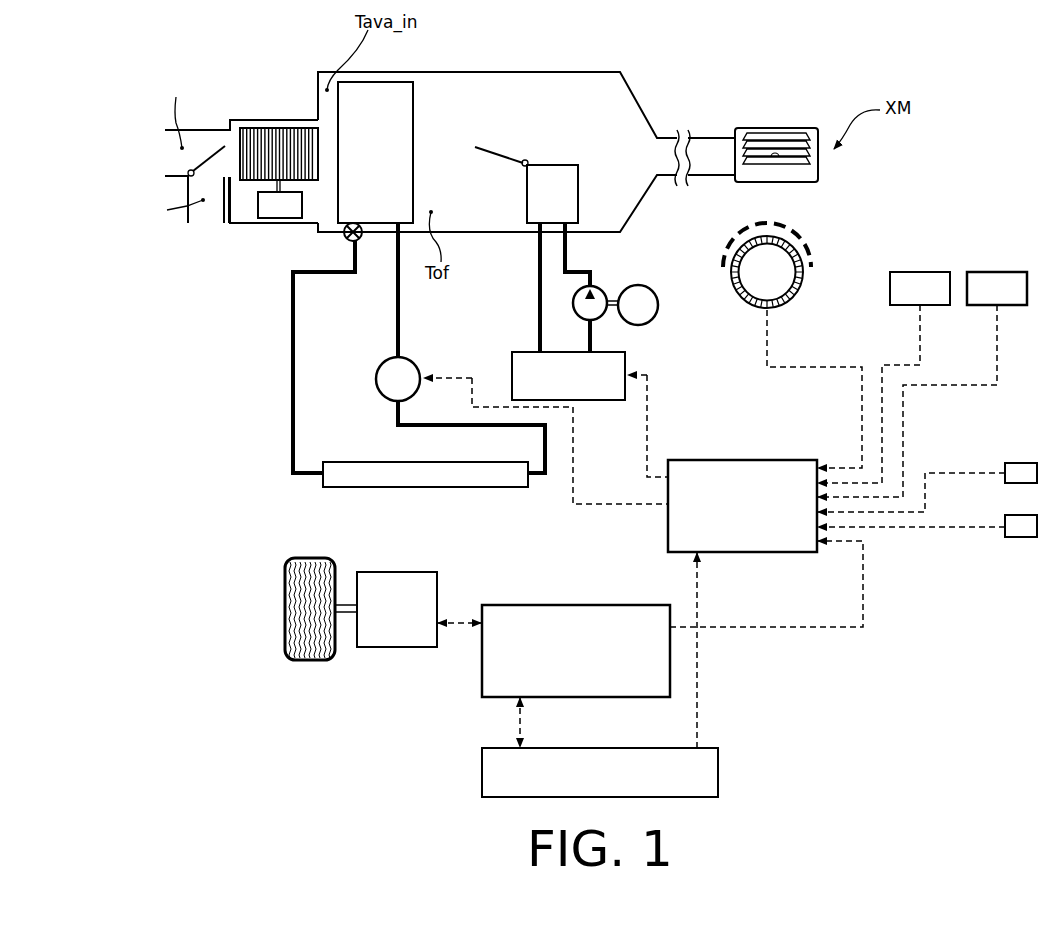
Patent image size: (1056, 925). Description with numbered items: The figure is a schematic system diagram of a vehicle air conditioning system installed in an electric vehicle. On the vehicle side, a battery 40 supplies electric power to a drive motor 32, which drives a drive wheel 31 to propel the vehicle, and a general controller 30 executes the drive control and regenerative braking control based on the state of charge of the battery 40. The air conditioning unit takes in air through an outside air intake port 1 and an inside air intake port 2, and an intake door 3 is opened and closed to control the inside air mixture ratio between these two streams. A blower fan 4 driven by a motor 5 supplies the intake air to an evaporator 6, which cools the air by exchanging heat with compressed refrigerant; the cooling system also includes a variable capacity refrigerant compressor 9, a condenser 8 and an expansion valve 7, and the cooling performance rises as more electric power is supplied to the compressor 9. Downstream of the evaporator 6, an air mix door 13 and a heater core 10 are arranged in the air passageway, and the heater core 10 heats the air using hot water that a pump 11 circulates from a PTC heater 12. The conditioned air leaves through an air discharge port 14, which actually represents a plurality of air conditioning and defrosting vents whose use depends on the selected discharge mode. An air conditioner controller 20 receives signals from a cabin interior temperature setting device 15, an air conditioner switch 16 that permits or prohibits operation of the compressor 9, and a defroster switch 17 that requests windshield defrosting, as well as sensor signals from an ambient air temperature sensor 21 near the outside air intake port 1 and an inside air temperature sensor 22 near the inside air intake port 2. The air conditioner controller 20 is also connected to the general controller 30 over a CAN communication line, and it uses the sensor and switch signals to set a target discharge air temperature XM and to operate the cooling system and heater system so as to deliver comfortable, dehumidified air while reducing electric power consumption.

The outside air intake port 1 is at (167, 128).
The inside air intake port 2 is at (185, 217).
The intake door 3 is at (215, 150).
The blower fan 4 is at (268, 128).
The motor 5 is at (268, 219).
The evaporator 6 is at (400, 103).
The expansion valve 7 is at (345, 238).
The condenser 8 is at (343, 488).
The variable capacity refrigerant compressor 9 is at (377, 365).
The heater core 10 is at (570, 165).
The pump 11 is at (607, 288).
The PTC heater 12 is at (627, 360).
The air mix door 13 is at (500, 150).
The air discharge port 14 is at (796, 123).
The cabin interior temperature setting device 15 is at (820, 242).
The air conditioner switch 16 is at (927, 272).
The defroster switch 17 is at (1000, 272).
The air conditioner controller 20 is at (780, 460).
The ambient air temperature sensor 21 is at (1020, 463).
The inside air temperature sensor 22 is at (1020, 537).
The general controller 30 is at (613, 605).
The drive wheel 31 is at (317, 660).
The drive motor 32 is at (422, 648).
The battery 40 is at (718, 758).